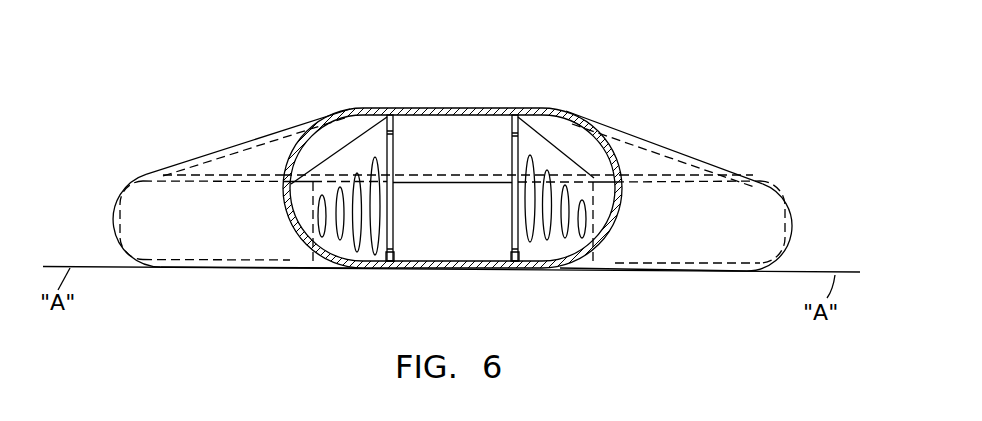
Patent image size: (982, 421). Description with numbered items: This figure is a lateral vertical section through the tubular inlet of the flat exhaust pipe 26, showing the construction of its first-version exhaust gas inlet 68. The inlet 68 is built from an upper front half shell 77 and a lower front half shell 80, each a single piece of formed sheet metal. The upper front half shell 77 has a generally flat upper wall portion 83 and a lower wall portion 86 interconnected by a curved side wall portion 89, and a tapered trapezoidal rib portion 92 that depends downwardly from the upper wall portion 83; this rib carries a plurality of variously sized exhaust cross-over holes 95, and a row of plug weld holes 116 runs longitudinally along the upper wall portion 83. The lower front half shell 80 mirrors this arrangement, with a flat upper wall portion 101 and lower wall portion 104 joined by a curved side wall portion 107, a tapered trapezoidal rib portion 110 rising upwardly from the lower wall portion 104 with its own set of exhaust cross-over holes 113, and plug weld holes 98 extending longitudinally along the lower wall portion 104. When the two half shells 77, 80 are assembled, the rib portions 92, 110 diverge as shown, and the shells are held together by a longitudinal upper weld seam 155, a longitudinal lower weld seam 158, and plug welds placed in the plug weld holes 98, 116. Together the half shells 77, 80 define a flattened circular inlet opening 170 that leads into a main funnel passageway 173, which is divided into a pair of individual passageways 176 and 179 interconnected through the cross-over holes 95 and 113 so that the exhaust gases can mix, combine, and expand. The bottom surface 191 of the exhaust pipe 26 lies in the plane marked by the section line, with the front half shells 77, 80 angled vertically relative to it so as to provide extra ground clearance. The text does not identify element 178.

The flat exhaust pipe 26 is at (458, 92).
The exhaust gas inlet 68 is at (580, 107).
The upper front half shell 77 is at (106, 240).
The lower front half shell 80 is at (791, 184).
The upper wall portion 83 is at (233, 146).
The lower wall portion 86 is at (207, 268).
The curved side wall portion 89 is at (113, 208).
The rib portion 92 is at (511, 217).
The exhaust cross-over holes 95 is at (530, 242).
The plug weld holes 98 is at (391, 265).
The upper wall portion 101 is at (703, 161).
The lower wall portion 104 is at (713, 272).
The curved side wall portion 107 is at (793, 227).
The rib portion 110 is at (394, 152).
The exhaust cross-over holes 113 is at (358, 248).
The plug weld holes 116 is at (518, 113).
The longitudinal upper weld seam 155 is at (389, 113).
The longitudinal lower weld seam 158 is at (515, 263).
The inlet opening 170 is at (450, 126).
The main funnel passageway 173 is at (490, 125).
The individual passageway 176 is at (342, 130).
The lower chamber 178 is at (442, 254).
The individual passageway 179 is at (580, 143).
The bottom surface 191 is at (277, 268).